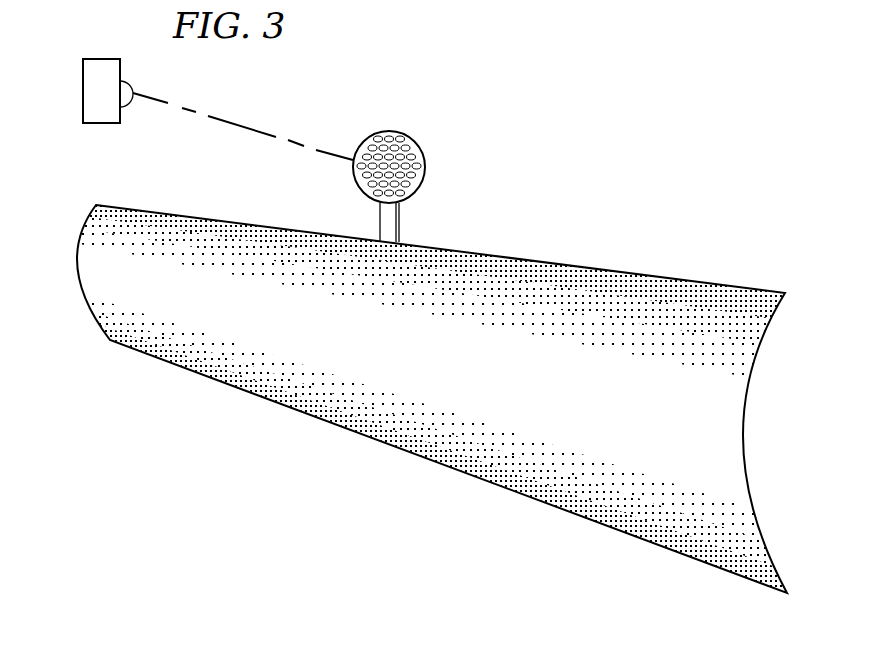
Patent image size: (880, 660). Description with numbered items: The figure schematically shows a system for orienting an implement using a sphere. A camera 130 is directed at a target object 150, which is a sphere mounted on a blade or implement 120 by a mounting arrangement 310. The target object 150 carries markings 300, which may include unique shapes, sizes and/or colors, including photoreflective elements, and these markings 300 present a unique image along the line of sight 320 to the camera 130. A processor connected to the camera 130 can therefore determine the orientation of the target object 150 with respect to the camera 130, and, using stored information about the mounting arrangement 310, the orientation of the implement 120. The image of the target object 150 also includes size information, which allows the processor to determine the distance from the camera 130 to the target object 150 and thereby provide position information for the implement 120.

The implement 120 is at (746, 437).
The camera 130 is at (83, 92).
The target object 150 is at (423, 126).
The markings 300 is at (392, 169).
The mounting arrangement 310 is at (400, 222).
The line of sight 320 is at (232, 127).